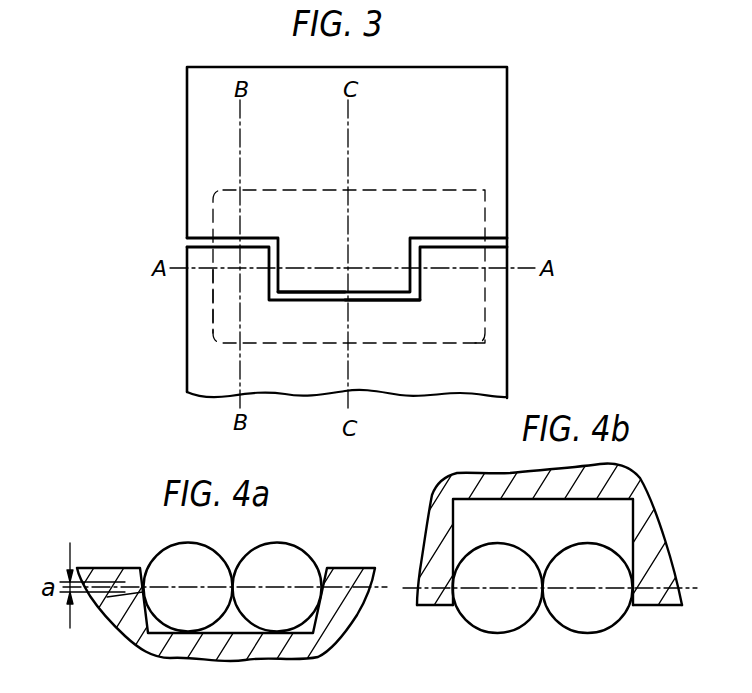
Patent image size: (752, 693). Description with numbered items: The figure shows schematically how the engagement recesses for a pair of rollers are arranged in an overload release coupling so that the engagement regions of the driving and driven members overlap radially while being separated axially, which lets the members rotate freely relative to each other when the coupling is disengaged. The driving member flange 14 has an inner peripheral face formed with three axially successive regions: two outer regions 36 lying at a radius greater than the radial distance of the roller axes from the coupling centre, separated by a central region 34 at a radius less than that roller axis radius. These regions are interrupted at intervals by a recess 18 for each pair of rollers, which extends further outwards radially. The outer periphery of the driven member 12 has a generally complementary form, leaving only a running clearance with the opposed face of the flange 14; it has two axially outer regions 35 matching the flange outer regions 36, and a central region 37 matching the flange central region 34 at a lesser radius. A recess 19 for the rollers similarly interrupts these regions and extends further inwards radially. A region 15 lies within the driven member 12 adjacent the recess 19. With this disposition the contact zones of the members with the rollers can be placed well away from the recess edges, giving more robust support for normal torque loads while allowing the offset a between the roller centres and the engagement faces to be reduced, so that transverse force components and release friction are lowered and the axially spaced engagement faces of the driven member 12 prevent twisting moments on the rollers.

In FIG. 3, the driven member 12 is at (203, 363).
In FIG. 3, the driving member flange 14 is at (488, 118).
In FIG. 3, the inner recess region 15 is at (213, 293).
In FIG. 3, the recess 18 is at (468, 188).
In FIG. 3, the recess 19 is at (490, 346).
In FIG. 3, the central region 34 is at (387, 301).
In FIG. 4b, the central region 34 is at (432, 606).
In FIG. 3, the axially outer regions 35 is at (470, 252).
In FIG. 4a, the axially outer regions 35 is at (338, 570).
In FIG. 3, the outer regions 36 is at (238, 238).
In FIG. 3, the central region 37 is at (290, 301).